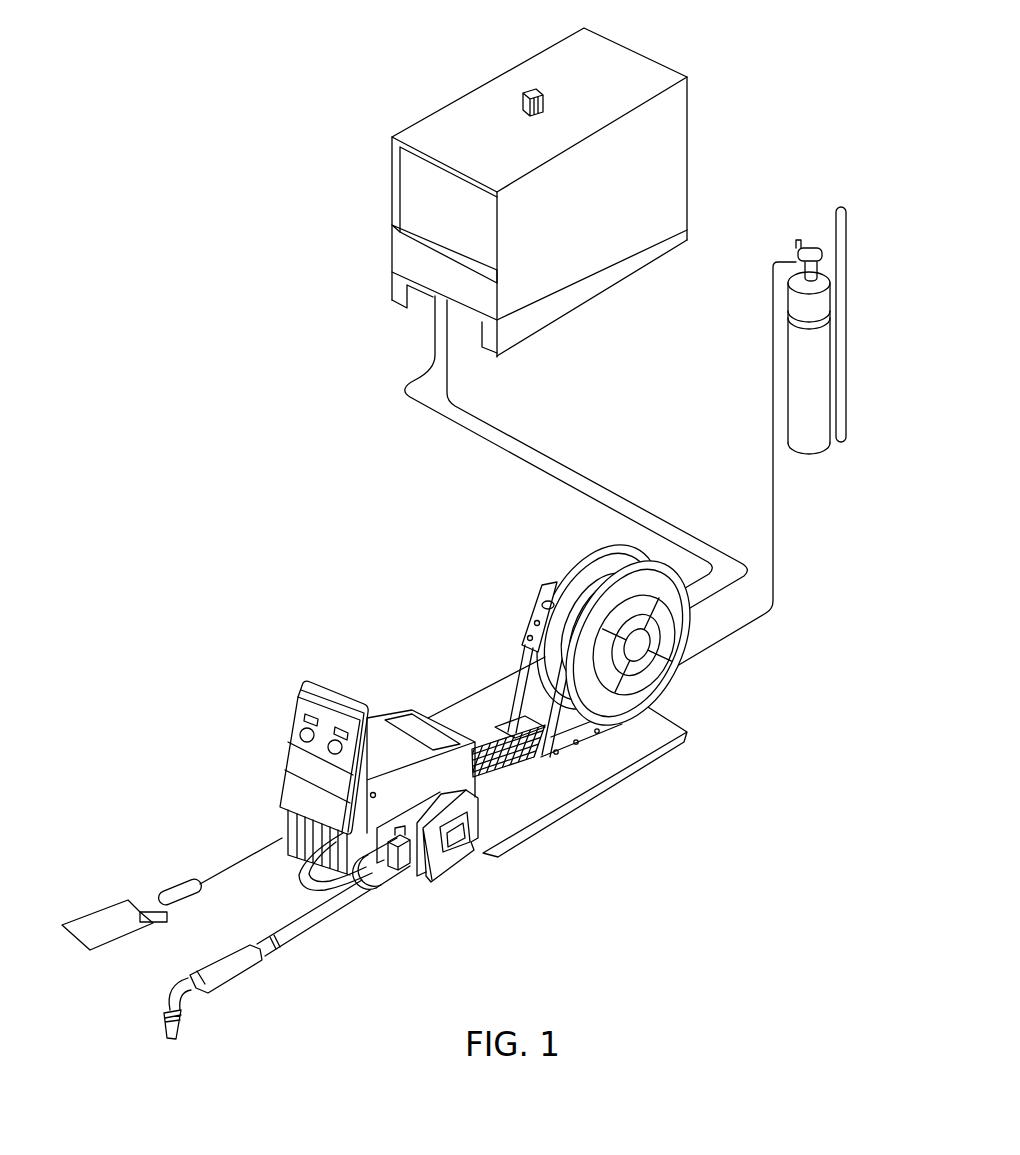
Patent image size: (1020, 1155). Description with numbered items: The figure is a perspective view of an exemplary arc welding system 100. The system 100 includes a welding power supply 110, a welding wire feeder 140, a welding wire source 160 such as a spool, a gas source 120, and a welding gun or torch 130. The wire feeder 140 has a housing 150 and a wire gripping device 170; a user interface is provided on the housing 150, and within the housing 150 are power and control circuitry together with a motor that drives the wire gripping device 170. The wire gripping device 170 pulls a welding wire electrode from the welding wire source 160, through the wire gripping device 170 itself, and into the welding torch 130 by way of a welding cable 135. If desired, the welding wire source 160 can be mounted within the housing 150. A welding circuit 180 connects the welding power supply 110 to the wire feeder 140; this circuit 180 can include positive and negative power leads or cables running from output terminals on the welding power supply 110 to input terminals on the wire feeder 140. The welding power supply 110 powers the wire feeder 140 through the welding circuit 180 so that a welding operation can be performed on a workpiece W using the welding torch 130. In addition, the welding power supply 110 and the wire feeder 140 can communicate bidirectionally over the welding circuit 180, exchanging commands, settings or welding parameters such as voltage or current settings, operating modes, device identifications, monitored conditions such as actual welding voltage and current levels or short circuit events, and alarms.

The arc welding system 100 is at (259, 85).
The welding power supply 110 is at (653, 60).
The gas source 120 is at (857, 192).
The welding gun or torch 130 is at (230, 968).
The welding cable 135 is at (370, 890).
The welding wire feeder 140 is at (349, 657).
The housing 150 is at (385, 714).
The welding wire source 160 is at (607, 527).
The wire gripping device 170 is at (460, 855).
The welding circuit 180 is at (417, 457).
The workpiece W is at (102, 908).